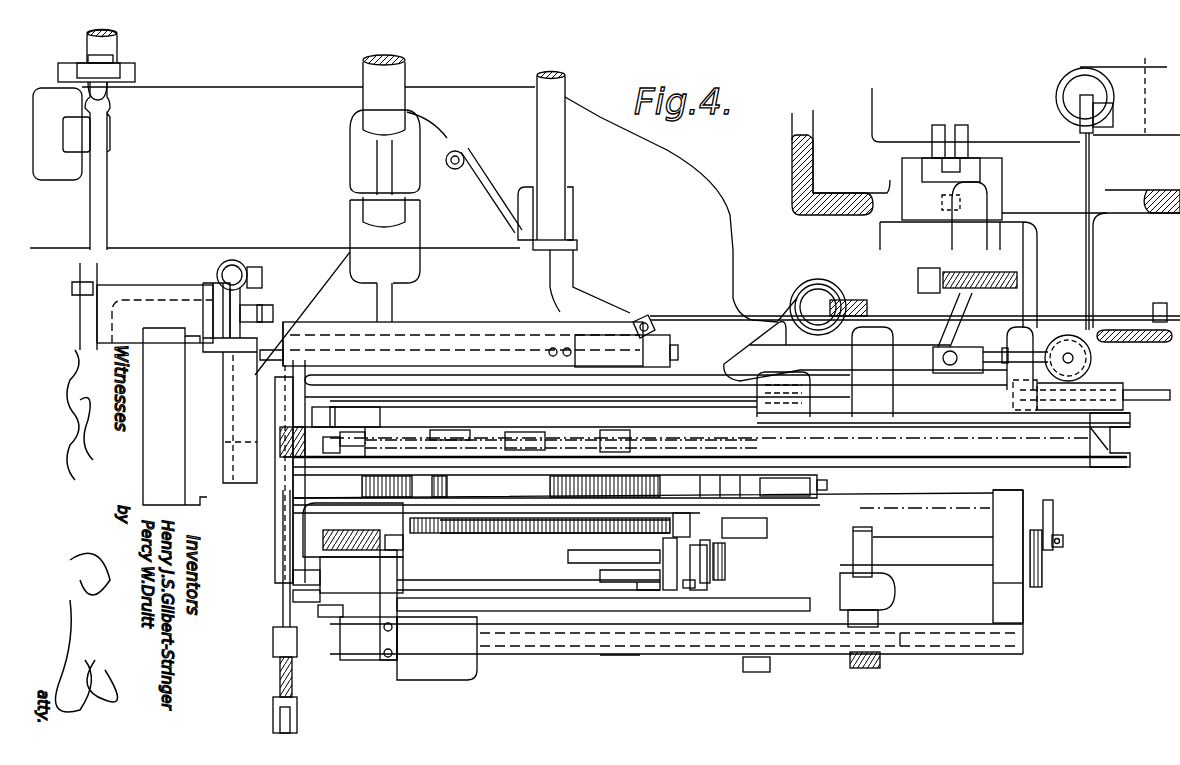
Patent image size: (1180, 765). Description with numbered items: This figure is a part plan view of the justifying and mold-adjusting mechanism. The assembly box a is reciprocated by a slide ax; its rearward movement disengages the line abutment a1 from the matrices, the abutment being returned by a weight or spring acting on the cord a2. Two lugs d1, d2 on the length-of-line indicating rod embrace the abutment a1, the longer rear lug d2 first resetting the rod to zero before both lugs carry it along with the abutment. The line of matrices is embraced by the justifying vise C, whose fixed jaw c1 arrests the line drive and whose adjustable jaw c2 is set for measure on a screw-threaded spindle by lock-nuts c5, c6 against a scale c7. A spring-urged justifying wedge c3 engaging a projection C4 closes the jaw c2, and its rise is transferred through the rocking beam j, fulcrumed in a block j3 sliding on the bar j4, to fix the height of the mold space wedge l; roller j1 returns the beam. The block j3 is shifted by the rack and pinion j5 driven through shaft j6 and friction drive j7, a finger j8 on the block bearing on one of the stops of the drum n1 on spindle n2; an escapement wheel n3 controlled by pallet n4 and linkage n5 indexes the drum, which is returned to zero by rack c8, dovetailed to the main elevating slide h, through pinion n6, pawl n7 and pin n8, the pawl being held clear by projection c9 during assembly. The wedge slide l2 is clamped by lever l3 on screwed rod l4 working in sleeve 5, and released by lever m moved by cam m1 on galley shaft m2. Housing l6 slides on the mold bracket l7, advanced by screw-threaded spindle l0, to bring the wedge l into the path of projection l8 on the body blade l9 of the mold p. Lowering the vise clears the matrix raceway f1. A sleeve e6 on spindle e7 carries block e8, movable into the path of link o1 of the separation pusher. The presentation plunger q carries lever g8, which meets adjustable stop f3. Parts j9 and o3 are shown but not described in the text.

The lever m is at (97, 193).
The cam m1 is at (68, 70).
The galley shaft m2 is at (107, 43).
The mold space wedge l is at (314, 333).
The wedge slide l2 is at (248, 310).
The spring-urged lever l3 is at (90, 292).
The screwed rod l4 is at (390, 358).
The housing l6 is at (233, 295).
The mold bracket l7 is at (288, 442).
The projection l8 is at (262, 323).
The mold body blade l9 is at (237, 343).
The screw-threaded spindle l0 is at (250, 393).
The screw-threaded sleeve 5 is at (284, 466).
The mold p is at (242, 423).
The presentation plunger q is at (250, 548).
The lever g8 is at (325, 440).
The adjustable stop f3 is at (340, 432).
The matrix raceway f1 is at (640, 445).
The lock-nut c5 is at (420, 480).
The lock-nut c6 is at (560, 485).
The rack c8 is at (525, 463).
The fixed jaw c1 is at (740, 485).
The adjustable jaw c2 is at (470, 520).
The justifying wedge c3 is at (810, 488).
The justifying vise C is at (697, 486).
The projection C4 is at (840, 482).
The scale c7 is at (500, 533).
The projection c9 is at (710, 540).
The assembly box a is at (1150, 393).
The line abutment a1 is at (1108, 433).
The cord a2 is at (1090, 298).
The slide ax is at (1012, 242).
The lug d1 is at (1080, 387).
The rear lug d2 is at (1123, 390).
The sleeve e6 is at (355, 505).
The spindle e7 is at (388, 548).
The block e8 is at (287, 612).
The main elevating slide h is at (528, 570).
The rocking beam j is at (676, 572).
The roller j1 is at (320, 611).
The fulcrum block j3 is at (415, 650).
The bar j4 is at (610, 655).
The rack and pinion j5 is at (818, 655).
The shaft j6 is at (872, 528).
The frictional drive j7 is at (880, 605).
The finger j8 is at (390, 600).
The spring j9 is at (880, 668).
The drum n1 is at (490, 590).
The spindle n2 is at (920, 550).
The escapement wheel n3 is at (1043, 575).
The pallet n4 is at (1053, 525).
The linkage n5 is at (1063, 541).
The pinion n6 is at (725, 550).
The spring-urged pawl n7 is at (722, 578).
The pin n8 is at (688, 588).
The link o1 is at (293, 645).
The stop o3 is at (283, 583).